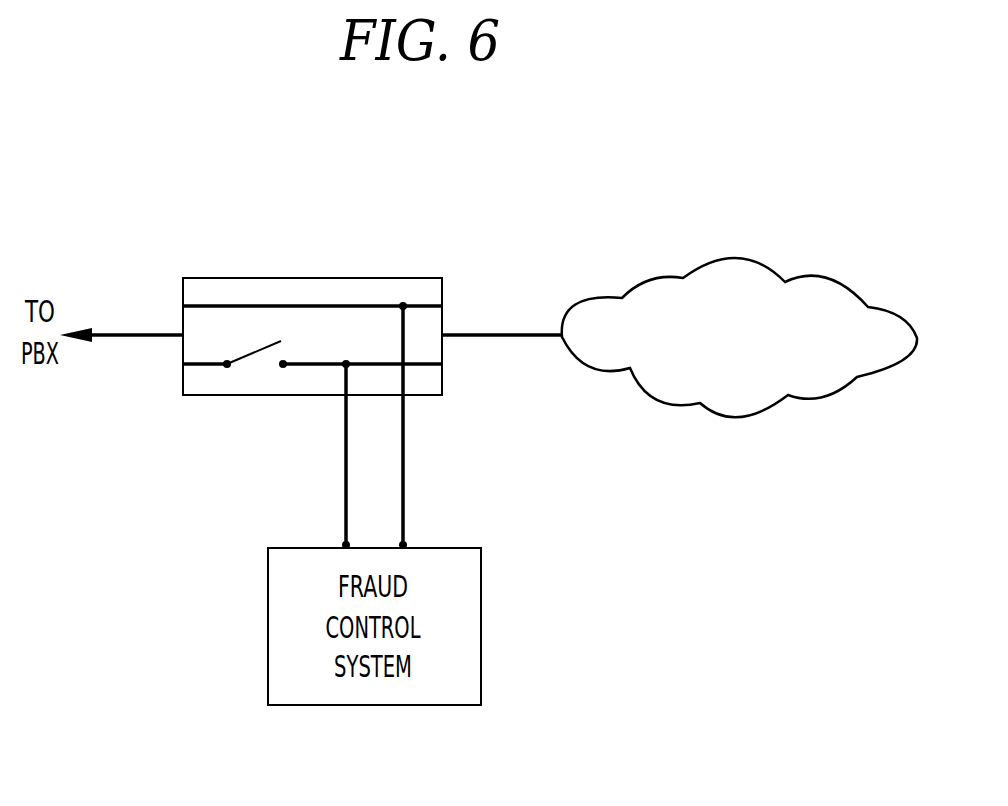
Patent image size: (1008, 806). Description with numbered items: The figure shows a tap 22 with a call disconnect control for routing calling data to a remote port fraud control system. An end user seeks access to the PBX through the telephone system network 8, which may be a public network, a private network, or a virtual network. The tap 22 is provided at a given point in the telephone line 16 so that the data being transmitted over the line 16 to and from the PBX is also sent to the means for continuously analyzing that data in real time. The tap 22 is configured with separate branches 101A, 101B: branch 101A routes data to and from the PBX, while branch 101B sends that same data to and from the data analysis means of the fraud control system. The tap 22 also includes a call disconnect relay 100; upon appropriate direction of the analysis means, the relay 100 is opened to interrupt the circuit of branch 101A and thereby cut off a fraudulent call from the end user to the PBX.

The telephone system network 8 is at (732, 270).
The telephone line 16 is at (123, 332).
The tap 22 is at (260, 278).
The call disconnect relay 100 is at (254, 357).
The first branch 101A is at (428, 307).
The second branch 101B is at (344, 485).